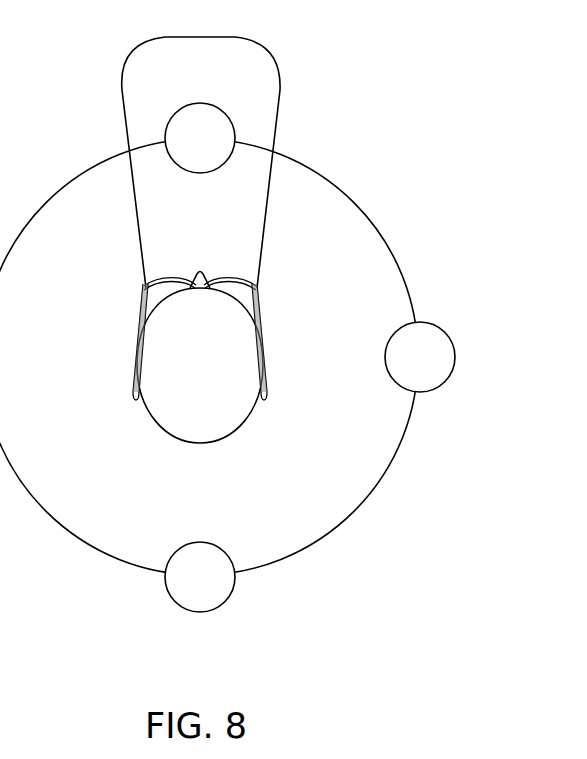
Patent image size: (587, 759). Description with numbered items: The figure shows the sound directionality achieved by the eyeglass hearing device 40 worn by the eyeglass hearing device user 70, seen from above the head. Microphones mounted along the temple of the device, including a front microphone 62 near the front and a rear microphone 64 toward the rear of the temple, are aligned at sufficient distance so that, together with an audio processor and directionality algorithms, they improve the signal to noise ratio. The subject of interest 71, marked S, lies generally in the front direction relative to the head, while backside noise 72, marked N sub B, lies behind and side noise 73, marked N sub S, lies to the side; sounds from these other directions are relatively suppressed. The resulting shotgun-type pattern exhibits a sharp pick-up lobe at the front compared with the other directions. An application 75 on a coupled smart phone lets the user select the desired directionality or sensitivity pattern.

The eyeglass hearing device 40 is at (196, 354).
The front microphone 62 is at (147, 286).
The rear microphone 64 is at (141, 356).
The eyeglass hearing device user 70 is at (133, 393).
The subject of interest 71 is at (236, 128).
The backside noise 72 is at (166, 590).
The side noise 73 is at (455, 355).
The application 75 is at (124, 113).